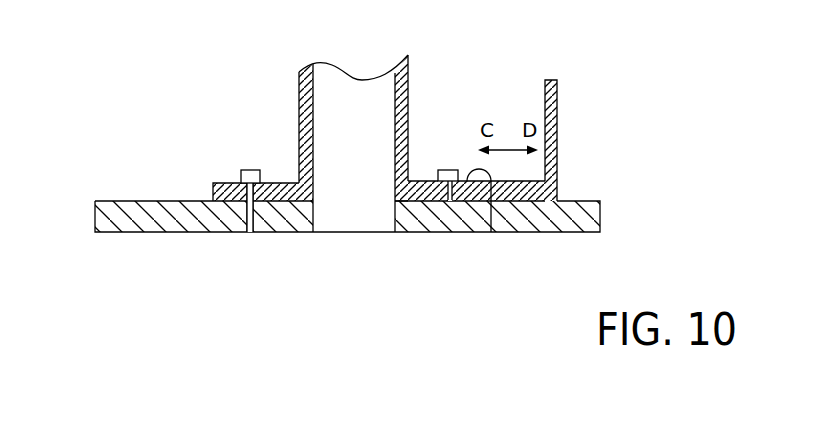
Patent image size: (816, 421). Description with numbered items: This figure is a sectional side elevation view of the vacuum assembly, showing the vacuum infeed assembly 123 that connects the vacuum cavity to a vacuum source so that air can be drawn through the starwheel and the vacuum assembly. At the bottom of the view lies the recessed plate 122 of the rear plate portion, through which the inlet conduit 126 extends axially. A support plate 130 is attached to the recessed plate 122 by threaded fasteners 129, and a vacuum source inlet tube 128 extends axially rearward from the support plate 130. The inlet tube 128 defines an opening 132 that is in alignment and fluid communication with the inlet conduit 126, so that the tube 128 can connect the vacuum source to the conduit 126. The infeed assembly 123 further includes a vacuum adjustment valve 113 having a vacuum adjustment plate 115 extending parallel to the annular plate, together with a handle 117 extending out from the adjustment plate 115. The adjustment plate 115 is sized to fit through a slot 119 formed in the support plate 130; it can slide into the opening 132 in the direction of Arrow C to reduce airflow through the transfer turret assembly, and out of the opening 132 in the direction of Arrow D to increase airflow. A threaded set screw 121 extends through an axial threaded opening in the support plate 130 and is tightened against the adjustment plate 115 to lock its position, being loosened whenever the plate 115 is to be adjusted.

The vacuum adjustment valve 113 is at (595, 136).
The vacuum adjustment plate 115 is at (496, 181).
The handle 117 is at (557, 135).
The slot 119 is at (491, 232).
The threaded set screw 121 is at (453, 170).
The recessed plate 122 is at (148, 201).
The vacuum infeed assembly 123 is at (340, 126).
The inlet conduit 126 is at (395, 220).
The vacuum source inlet tube 128 is at (299, 103).
The threaded fasteners 129 is at (245, 170).
The support plate 130 is at (427, 181).
The opening 132 is at (369, 138).